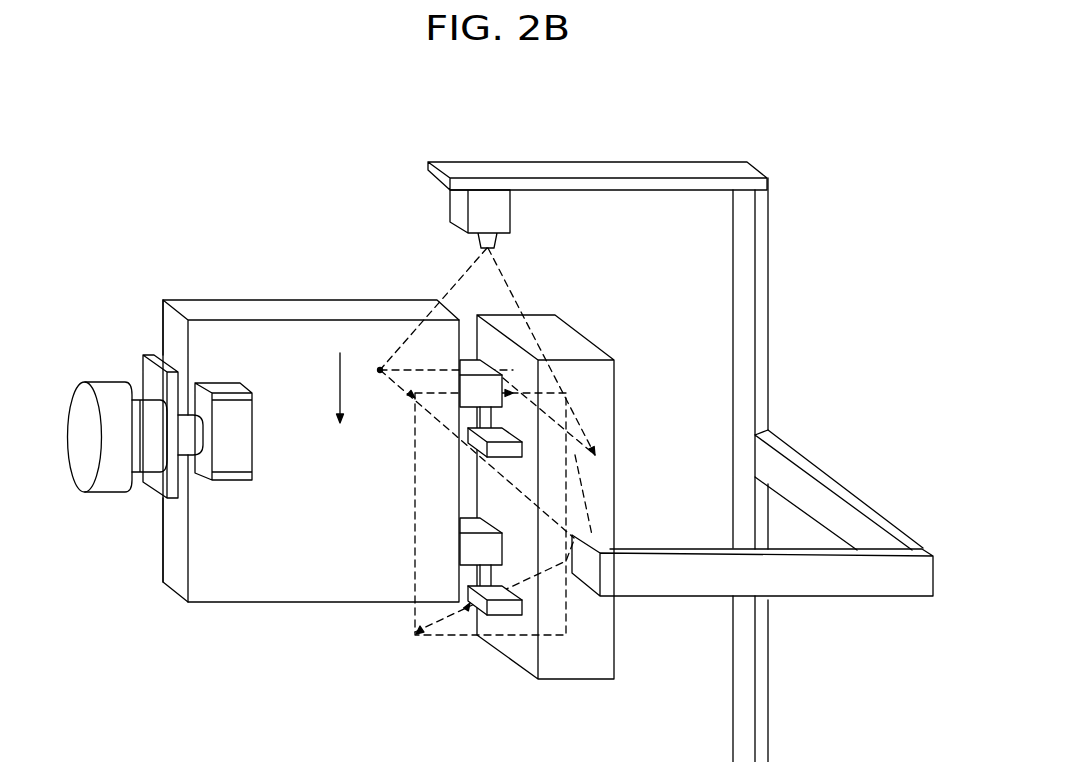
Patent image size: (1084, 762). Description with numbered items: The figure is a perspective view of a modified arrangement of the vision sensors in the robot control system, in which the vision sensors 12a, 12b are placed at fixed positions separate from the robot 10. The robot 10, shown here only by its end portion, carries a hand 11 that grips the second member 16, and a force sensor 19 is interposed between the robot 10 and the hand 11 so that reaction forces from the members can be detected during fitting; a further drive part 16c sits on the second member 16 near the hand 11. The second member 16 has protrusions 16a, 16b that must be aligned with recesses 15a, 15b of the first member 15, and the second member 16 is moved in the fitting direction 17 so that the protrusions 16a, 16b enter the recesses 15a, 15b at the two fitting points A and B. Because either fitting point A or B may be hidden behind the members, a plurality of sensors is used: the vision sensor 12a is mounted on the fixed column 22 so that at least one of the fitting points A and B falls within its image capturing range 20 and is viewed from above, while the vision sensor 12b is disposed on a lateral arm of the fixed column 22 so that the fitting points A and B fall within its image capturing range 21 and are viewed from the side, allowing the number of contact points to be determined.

The robot 10 is at (115, 478).
The hand 11 is at (233, 480).
The force sensor 19 is at (137, 398).
The second member 16 is at (230, 588).
The protrusion 16a is at (470, 378).
The protrusion 16b is at (470, 547).
The drive unit 16c is at (240, 422).
The fitting direction 17 is at (338, 392).
The first member 15 is at (597, 667).
The recess 15a is at (522, 447).
The recess 15b is at (517, 607).
The vision sensor 12a is at (492, 212).
The vision sensor 12b is at (608, 544).
The image capturing range 20 is at (509, 283).
The image capturing range 21 is at (512, 650).
The fixed column 22 is at (520, 172).
The fitting point A is at (583, 450).
The fitting point B is at (470, 603).